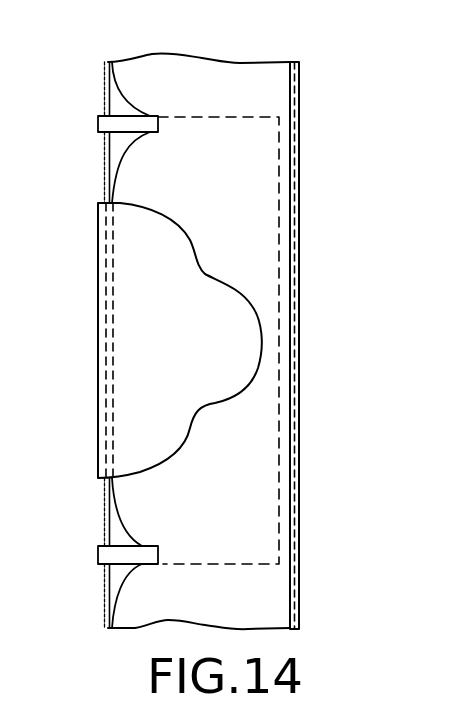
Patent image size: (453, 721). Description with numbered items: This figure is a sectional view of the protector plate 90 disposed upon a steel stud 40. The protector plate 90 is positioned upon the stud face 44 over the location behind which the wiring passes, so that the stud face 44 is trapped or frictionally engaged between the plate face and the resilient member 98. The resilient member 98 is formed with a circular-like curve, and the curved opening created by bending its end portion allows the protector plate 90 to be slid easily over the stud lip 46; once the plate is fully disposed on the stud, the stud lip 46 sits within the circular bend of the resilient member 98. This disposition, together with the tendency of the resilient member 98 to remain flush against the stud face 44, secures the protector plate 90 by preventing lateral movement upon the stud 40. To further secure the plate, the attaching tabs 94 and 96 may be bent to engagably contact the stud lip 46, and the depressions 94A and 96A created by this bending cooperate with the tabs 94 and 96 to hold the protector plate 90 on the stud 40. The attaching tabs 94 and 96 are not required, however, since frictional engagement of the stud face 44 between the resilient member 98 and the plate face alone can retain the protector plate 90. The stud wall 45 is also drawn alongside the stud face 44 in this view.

The steel stud 40 is at (253, 330).
The stud face 44 is at (252, 76).
The side wall 45 is at (299, 442).
The stud lip 46 is at (109, 73).
The protector plate 90 is at (192, 339).
The attaching tab 94 is at (158, 553).
The depression 94A is at (108, 532).
The attaching tab 96 is at (159, 128).
The depression 96A is at (112, 145).
The resilient member 98 is at (208, 346).